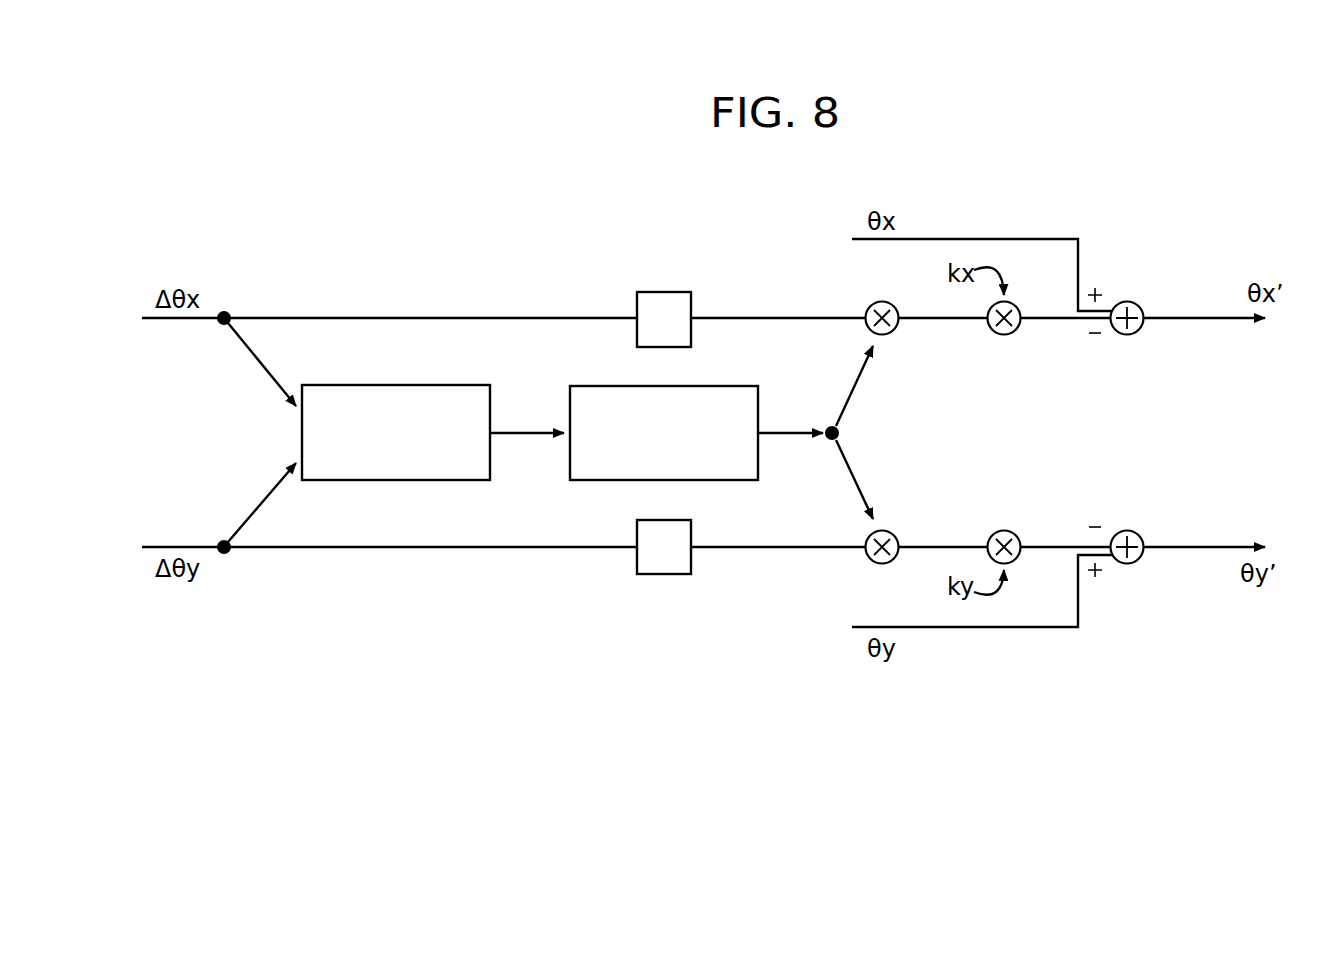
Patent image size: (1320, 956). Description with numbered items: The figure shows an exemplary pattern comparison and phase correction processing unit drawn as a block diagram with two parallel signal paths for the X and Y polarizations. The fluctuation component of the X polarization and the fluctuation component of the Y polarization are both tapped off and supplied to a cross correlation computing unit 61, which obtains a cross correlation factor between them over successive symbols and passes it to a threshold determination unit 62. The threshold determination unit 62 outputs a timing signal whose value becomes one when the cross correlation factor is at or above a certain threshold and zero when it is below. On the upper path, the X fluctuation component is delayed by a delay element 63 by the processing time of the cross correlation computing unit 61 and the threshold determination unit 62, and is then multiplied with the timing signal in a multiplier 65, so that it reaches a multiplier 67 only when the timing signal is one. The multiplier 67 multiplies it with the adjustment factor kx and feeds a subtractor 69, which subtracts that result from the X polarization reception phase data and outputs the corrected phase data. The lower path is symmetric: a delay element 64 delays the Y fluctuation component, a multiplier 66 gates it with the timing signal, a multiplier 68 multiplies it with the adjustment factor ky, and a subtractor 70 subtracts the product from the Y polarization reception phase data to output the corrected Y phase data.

The cross correlation computing unit 61 is at (452, 385).
The threshold determination unit 62 is at (720, 386).
The delay element 63 is at (664, 292).
The delay element 64 is at (664, 520).
The multiplier 65 is at (893, 331).
The multiplier 66 is at (893, 534).
The multiplier 67 is at (1015, 331).
The multiplier 68 is at (1015, 534).
The subtractor 69 is at (1138, 331).
The subtractor 70 is at (1138, 534).